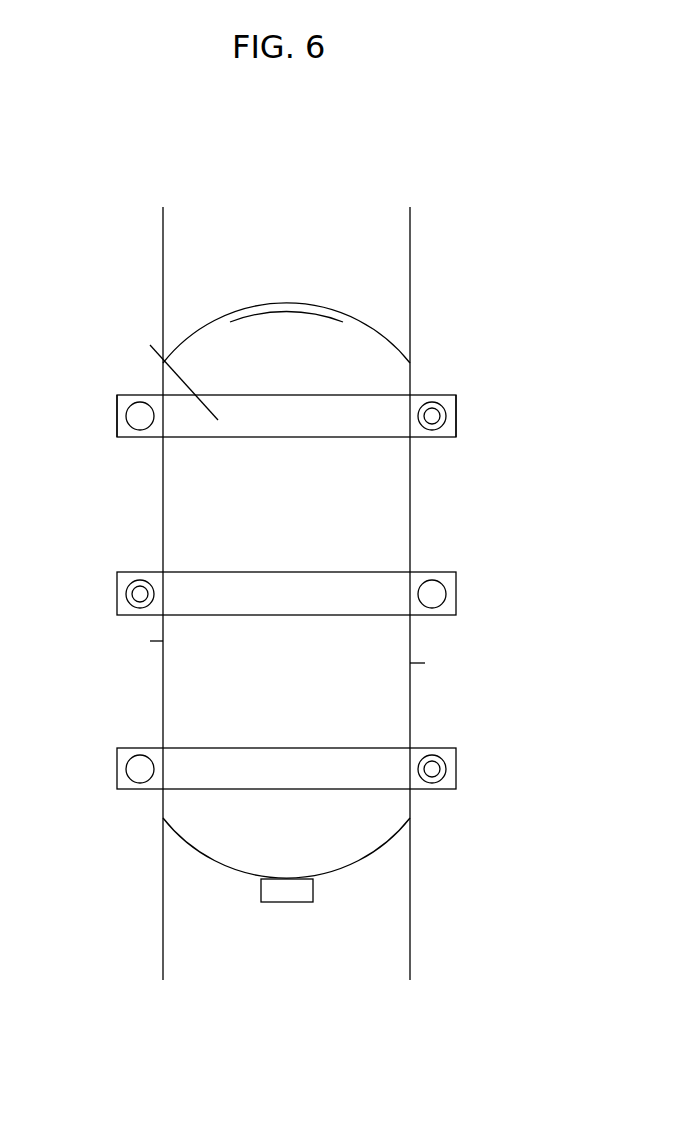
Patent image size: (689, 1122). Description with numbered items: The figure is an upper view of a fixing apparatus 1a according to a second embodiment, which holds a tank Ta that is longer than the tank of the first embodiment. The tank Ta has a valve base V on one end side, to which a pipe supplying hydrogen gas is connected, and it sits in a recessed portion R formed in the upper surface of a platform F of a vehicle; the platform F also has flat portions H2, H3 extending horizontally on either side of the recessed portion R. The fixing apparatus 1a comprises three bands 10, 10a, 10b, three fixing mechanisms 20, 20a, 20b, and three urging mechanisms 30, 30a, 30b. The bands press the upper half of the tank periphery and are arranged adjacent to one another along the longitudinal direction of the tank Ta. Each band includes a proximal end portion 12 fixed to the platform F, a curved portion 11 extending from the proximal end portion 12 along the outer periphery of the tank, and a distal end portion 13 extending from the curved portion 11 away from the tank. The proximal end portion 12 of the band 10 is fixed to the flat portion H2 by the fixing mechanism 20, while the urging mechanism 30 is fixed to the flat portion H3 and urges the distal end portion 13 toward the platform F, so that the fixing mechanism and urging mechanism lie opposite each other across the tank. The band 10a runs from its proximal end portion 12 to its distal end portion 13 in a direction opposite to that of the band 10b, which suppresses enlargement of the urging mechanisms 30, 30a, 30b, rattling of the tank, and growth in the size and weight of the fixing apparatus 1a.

The fixing apparatus 1a is at (435, 268).
The tank Ta is at (330, 335).
The valve base V is at (313, 890).
The platform F is at (152, 290).
The recessed portion R is at (213, 245).
The band 10 is at (378, 390).
The band 10a is at (380, 568).
The band 10b is at (385, 745).
The curved portion 11 is at (150, 345).
The proximal end portion 12 is at (126, 413).
The distal end portion 13 is at (446, 428).
The fixing mechanism 20 is at (117, 393).
The fixing mechanism 20a is at (455, 570).
The fixing mechanism 20b is at (140, 795).
The urging mechanism 30 is at (447, 393).
The urging mechanism 30a is at (118, 570).
The urging mechanism 30b is at (452, 748).
The flat portion H2 is at (150, 641).
The flat portion H3 is at (425, 663).